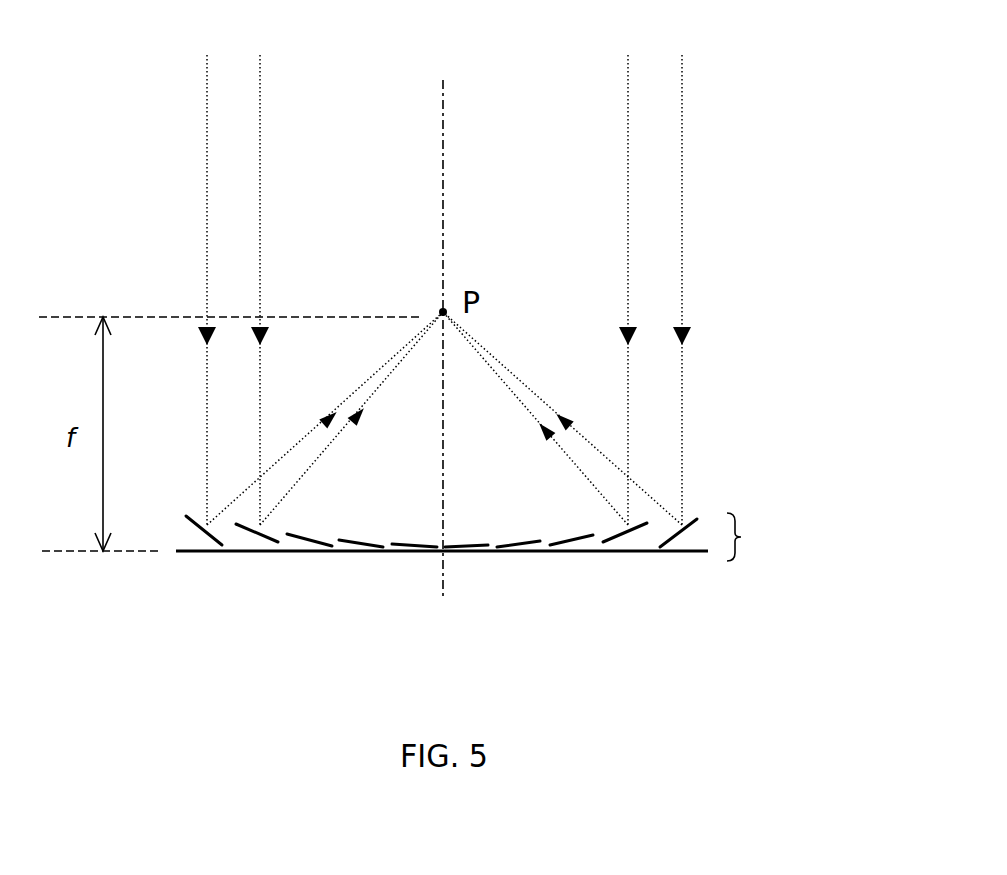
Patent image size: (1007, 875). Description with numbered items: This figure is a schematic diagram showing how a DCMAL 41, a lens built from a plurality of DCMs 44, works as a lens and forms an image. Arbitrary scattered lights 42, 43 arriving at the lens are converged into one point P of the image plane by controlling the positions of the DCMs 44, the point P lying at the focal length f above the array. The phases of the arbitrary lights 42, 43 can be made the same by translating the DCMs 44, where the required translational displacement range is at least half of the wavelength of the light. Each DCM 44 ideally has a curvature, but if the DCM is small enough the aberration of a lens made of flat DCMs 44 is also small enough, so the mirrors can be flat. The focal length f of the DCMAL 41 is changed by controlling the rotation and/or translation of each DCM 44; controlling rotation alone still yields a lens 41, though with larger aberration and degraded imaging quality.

The DCMAL 41 is at (765, 538).
The scattered light 42 is at (613, 78).
The scattered light 43 is at (697, 123).
The DCM 44 is at (182, 527).